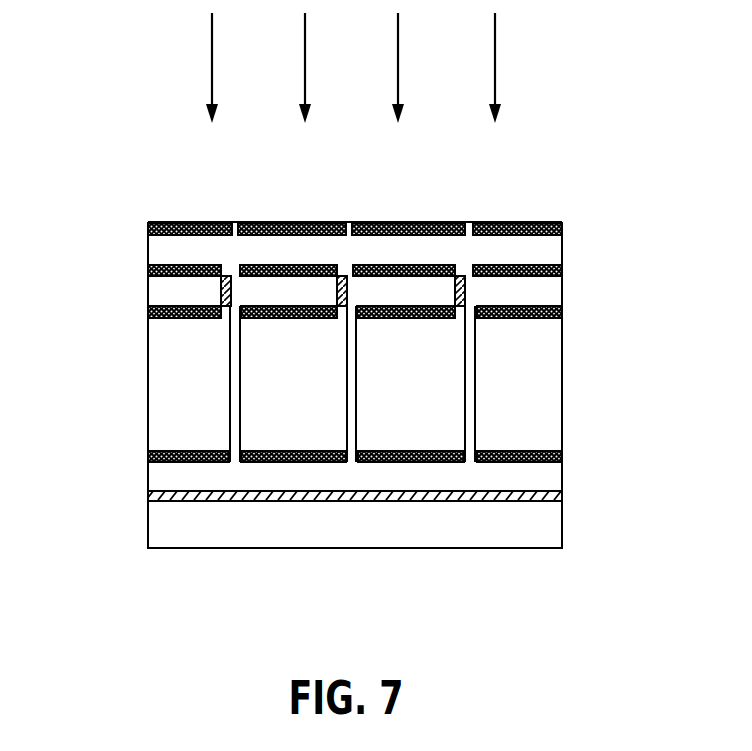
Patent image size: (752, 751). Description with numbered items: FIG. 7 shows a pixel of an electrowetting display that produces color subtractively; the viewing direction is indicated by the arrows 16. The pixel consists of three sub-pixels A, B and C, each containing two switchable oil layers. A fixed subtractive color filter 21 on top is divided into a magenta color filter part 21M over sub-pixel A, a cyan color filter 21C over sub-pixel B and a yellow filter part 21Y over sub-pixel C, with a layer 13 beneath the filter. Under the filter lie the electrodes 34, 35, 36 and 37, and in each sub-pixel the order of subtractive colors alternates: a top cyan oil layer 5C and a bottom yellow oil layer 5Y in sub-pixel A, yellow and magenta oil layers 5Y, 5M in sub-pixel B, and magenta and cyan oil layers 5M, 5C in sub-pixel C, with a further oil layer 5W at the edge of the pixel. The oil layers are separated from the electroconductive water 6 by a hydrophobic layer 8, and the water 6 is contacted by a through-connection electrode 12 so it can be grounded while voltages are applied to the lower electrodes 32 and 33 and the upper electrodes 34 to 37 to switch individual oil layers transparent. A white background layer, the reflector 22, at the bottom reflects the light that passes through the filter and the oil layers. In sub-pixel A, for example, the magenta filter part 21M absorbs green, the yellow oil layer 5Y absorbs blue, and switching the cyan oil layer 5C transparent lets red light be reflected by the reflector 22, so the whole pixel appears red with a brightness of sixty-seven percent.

The arrows 16 is at (496, 51).
The fixed subtractive color filter 21 is at (163, 222).
The magenta color filter part 21M is at (300, 222).
The cyan color filter 21C is at (377, 222).
The front electrode (yellow) 21Y is at (535, 222).
The substrate / partition wall 13 is at (185, 244).
The electrode 12 is at (225, 276).
The electrode 34 is at (148, 268).
The electrode 35 is at (259, 265).
The electrode 36 is at (413, 265).
The electrode 37 is at (498, 265).
The white layer 5W is at (148, 309).
The cyan oil layer 5C is at (273, 321).
The magenta oil layer 5M is at (562, 310).
The yellow oil layer 5Y is at (431, 321).
The second fluid 6 is at (253, 415).
The hydrophobic layer 8 is at (188, 480).
The electrode 32 is at (252, 501).
The electrode 33 is at (388, 502).
The white background layer 22 is at (512, 528).